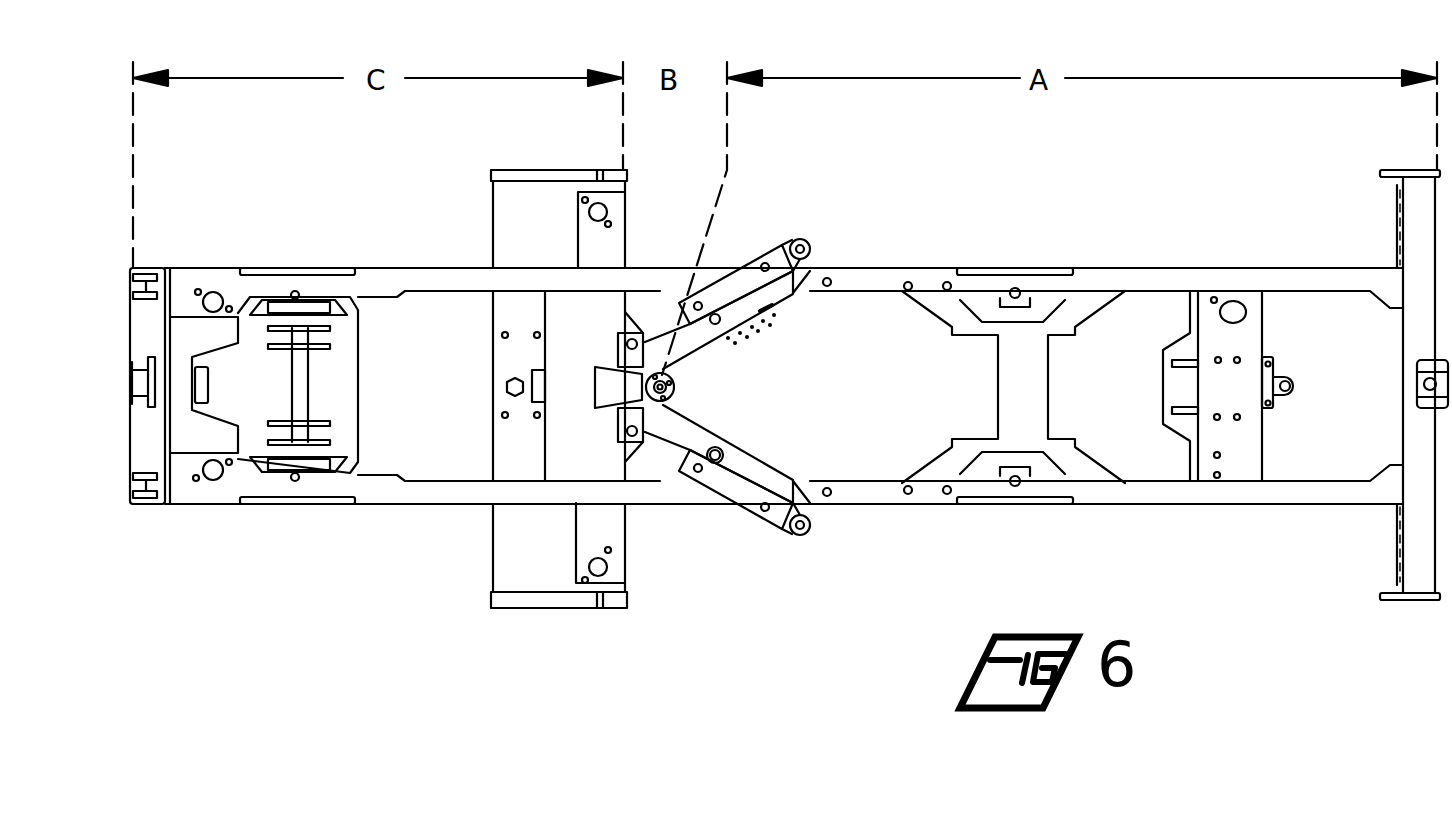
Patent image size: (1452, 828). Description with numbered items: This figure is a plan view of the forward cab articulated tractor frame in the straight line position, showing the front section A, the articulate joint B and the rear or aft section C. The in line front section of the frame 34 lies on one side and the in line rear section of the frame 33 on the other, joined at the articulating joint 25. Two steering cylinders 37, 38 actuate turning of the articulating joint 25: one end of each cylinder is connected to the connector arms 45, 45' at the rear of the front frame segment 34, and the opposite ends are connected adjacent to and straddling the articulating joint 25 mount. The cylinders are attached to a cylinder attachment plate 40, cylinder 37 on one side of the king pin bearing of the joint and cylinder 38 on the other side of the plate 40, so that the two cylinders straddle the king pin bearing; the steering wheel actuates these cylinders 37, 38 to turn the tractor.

The articulating joint 25 is at (674, 388).
The in line rear section of articulated tractor frame 33 is at (1020, 513).
The in line front section of front cab articulated tractor frame 34 is at (312, 508).
The cylinder to actuate turning of the articulating joint 37 is at (743, 497).
The cylinder to actuate turning of the articulating tractor 38 is at (772, 262).
The cylinder attachment plate 40 is at (620, 352).
The rear frame connector arm to articulated joint 45 is at (738, 320).
The rear frame connector arm to articulated joint 45' is at (742, 454).